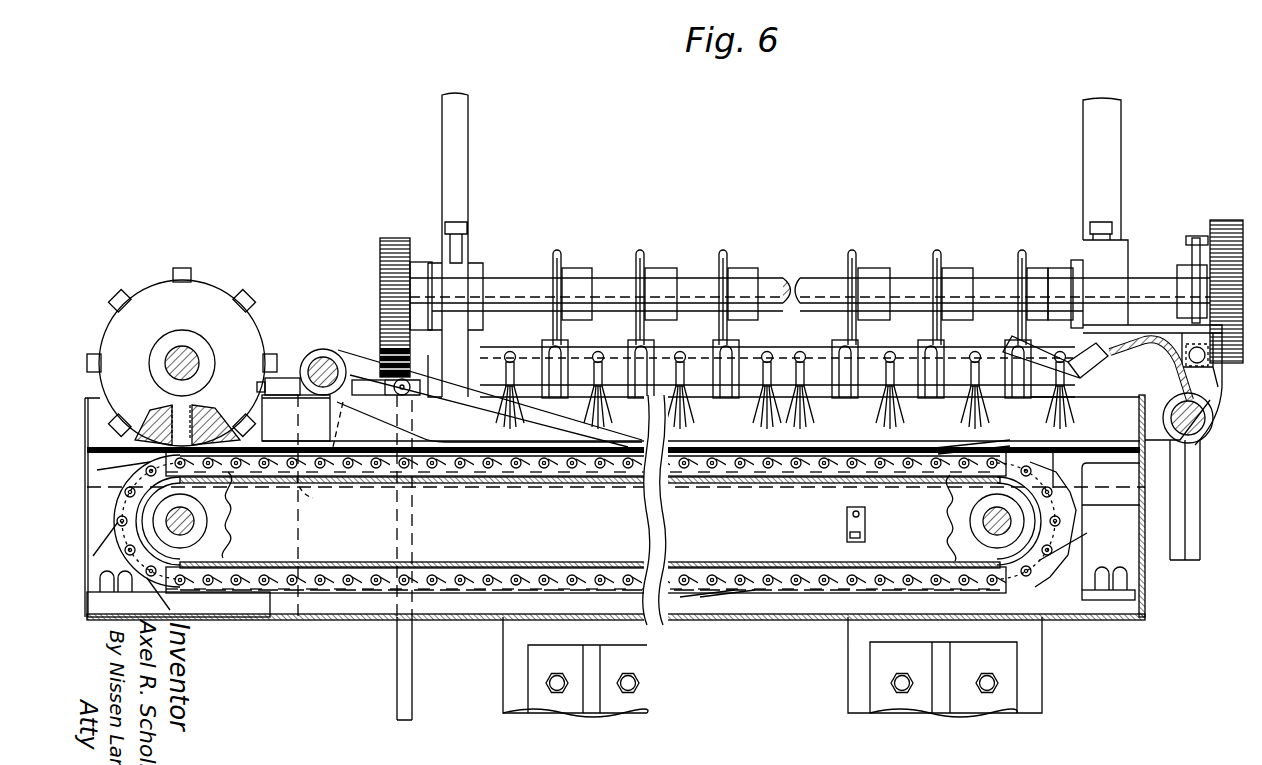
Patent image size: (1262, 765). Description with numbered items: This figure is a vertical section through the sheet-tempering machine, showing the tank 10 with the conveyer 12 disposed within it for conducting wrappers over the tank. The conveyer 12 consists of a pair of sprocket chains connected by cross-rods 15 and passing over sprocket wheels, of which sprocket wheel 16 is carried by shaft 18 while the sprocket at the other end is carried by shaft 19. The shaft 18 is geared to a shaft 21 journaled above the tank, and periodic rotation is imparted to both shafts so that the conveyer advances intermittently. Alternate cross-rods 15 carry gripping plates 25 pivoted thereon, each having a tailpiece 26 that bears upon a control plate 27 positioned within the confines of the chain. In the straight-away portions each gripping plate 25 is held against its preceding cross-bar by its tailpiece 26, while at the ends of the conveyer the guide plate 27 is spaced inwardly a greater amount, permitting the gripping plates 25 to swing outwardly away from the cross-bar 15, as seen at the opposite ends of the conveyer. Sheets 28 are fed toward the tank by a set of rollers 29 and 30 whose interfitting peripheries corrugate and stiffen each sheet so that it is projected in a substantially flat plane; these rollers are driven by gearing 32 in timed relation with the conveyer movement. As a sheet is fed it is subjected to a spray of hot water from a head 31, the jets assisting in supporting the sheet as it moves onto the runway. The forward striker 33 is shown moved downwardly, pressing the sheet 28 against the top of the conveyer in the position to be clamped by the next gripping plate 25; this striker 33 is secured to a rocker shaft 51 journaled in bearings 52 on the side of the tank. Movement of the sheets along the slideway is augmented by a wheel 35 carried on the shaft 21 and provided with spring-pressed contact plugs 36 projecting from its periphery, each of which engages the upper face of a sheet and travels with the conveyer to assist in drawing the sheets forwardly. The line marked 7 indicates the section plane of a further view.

The section line 7- 7 is at (798, 717).
The tank 10 is at (478, 618).
The conveyer 12 is at (960, 516).
The cross-rods 15 is at (733, 458).
The sprocket wheel 16 is at (223, 520).
The shaft 18 is at (200, 514).
The shaft 19 is at (872, 532).
The shaft 21 is at (186, 358).
The gripping plates 25 is at (505, 460).
The tailpieces 26 is at (740, 598).
The control plates 27 is at (527, 575).
The sheets 28 is at (953, 450).
The roller 29 is at (718, 256).
The roller 30 is at (722, 356).
The spray head 31 is at (984, 276).
The gearing 32 is at (382, 250).
The forward striker 33 is at (690, 448).
The wheel 35 is at (247, 337).
The spring-pressed contact plugs 36 is at (122, 298).
The rocker shaft 51 is at (323, 362).
The bearings 52 is at (284, 386).